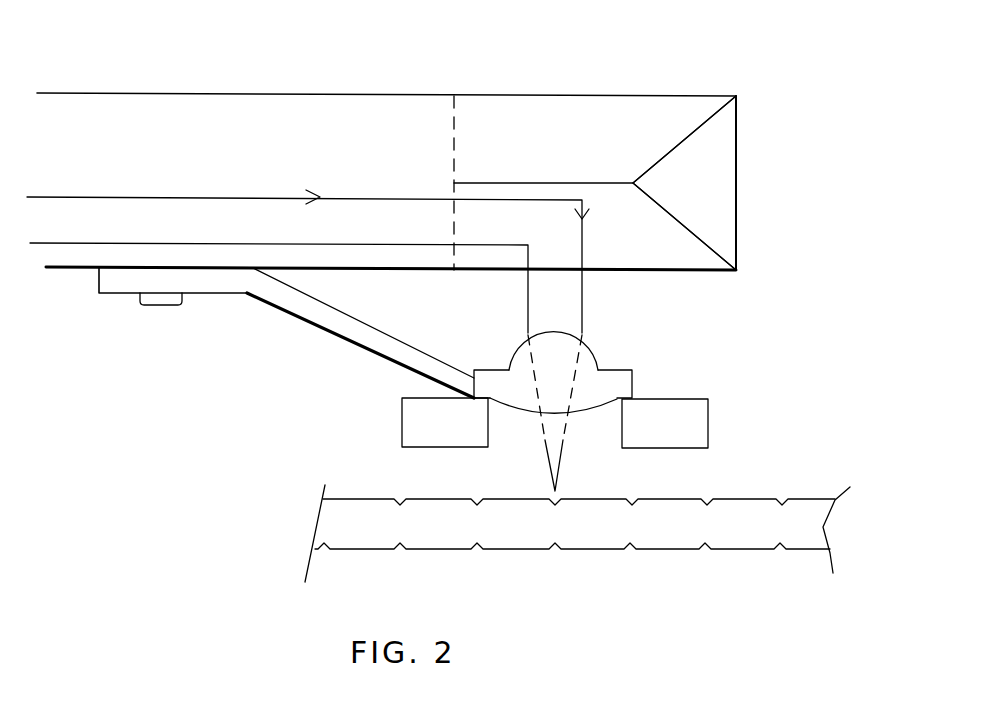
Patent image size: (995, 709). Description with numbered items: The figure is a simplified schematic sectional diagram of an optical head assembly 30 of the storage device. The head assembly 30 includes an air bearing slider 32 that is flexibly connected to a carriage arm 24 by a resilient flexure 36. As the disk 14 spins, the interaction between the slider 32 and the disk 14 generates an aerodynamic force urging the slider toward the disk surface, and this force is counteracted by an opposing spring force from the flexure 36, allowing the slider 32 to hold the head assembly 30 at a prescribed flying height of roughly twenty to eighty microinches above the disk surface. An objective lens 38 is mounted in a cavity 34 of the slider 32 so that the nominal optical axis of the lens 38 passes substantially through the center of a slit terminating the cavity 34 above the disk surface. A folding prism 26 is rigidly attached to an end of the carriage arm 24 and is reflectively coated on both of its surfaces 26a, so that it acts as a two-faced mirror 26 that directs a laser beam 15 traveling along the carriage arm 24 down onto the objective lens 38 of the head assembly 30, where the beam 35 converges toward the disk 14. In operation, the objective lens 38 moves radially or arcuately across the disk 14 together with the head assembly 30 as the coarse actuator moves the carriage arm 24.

The spinning disk 14 is at (818, 498).
The laser beam 15 is at (108, 198).
The carriage arm 24 is at (268, 92).
The folding prism 26 is at (643, 95).
The reflectively coated surfaces of the prism 26a is at (548, 109).
The optical head assembly 30 is at (793, 351).
The air bearing slider 32 is at (708, 413).
The cavity 34 is at (513, 399).
The focused light beam 35 is at (562, 450).
The resilient flexure 36 is at (337, 338).
The objective lens 38 is at (593, 340).